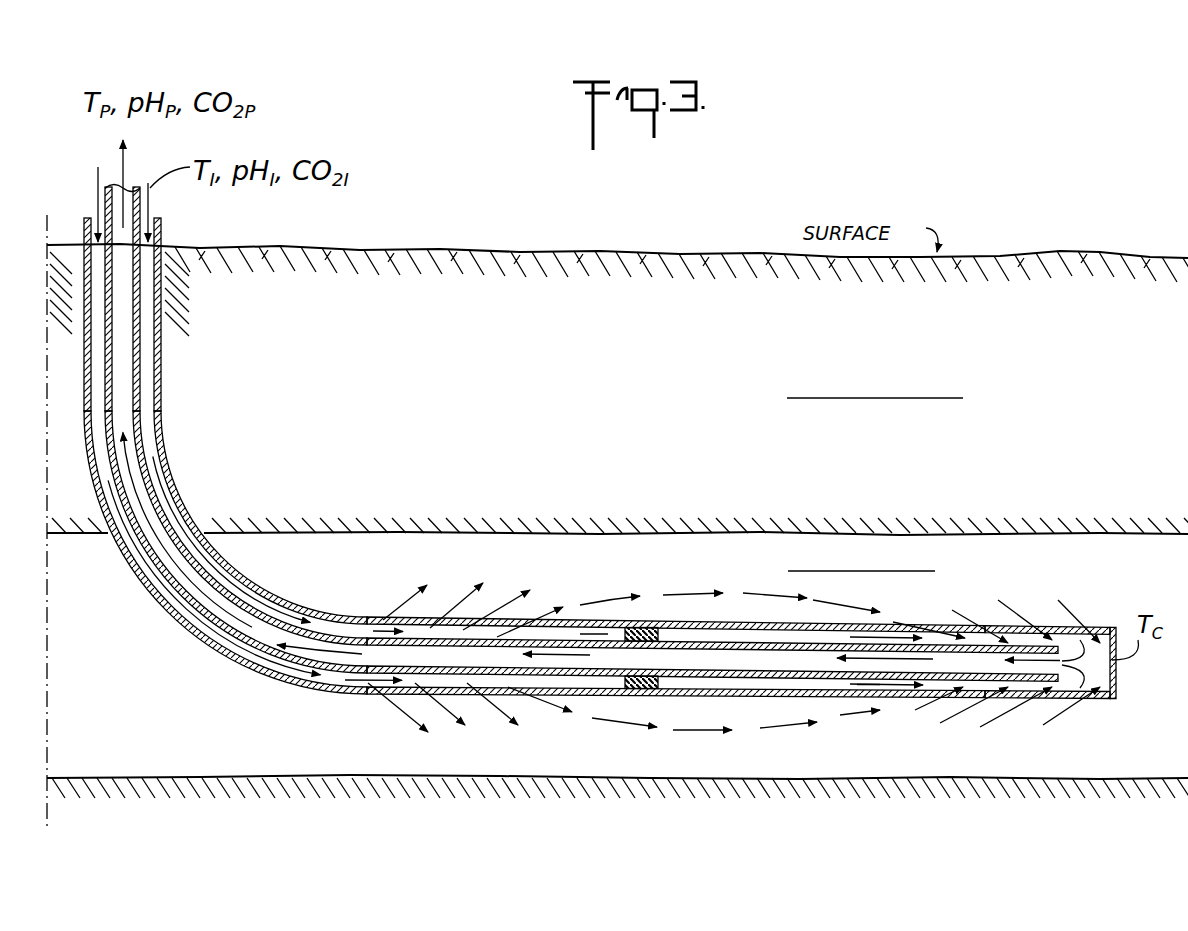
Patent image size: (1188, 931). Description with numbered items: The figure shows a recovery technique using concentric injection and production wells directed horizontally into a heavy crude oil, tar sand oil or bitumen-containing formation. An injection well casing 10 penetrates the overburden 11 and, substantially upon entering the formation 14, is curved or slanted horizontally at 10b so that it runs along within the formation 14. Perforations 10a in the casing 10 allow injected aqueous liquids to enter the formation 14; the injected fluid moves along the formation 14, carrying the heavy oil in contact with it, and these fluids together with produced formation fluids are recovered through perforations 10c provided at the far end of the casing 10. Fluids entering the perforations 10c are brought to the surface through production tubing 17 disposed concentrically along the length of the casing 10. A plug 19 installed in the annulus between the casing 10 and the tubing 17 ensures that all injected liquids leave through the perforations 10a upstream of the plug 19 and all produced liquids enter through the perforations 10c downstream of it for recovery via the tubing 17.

The injection well casing 10 is at (600, 458).
The perforations 10a is at (425, 620).
The curved or horizontally slanted portion 10b is at (272, 594).
The perforations 10c is at (988, 626).
The overburden 11 is at (600, 401).
The formation 14 is at (127, 681).
The production tubing 17 is at (140, 381).
The plug 19 is at (634, 689).